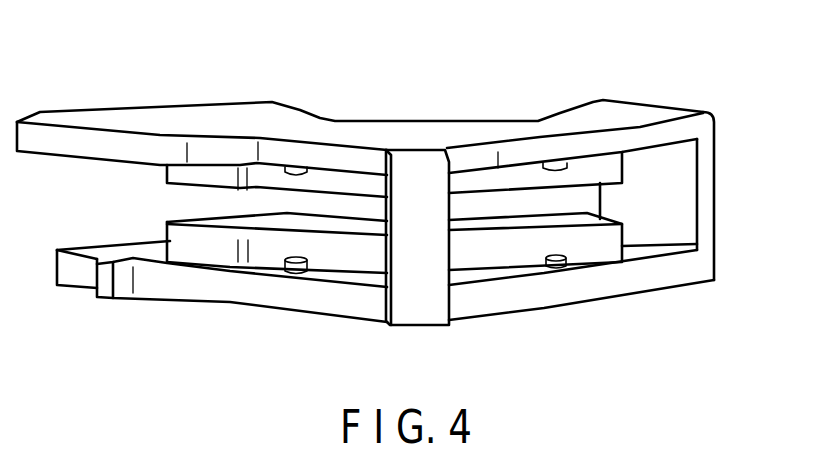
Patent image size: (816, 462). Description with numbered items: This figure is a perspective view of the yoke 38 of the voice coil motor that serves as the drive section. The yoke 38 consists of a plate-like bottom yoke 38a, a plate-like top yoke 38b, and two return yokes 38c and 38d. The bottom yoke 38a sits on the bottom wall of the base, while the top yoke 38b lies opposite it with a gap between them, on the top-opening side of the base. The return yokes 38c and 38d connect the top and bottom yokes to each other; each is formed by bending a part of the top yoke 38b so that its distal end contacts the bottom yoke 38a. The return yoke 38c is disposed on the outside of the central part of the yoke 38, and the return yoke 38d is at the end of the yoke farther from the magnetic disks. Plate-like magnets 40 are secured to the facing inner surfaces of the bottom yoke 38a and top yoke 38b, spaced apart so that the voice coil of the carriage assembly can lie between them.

The yoke 38 is at (415, 93).
The bottom yoke 38a is at (300, 300).
The top yoke 38b is at (337, 130).
The return yoke 38c is at (422, 230).
The return yoke 38d is at (677, 195).
The magnets 40 is at (606, 242).